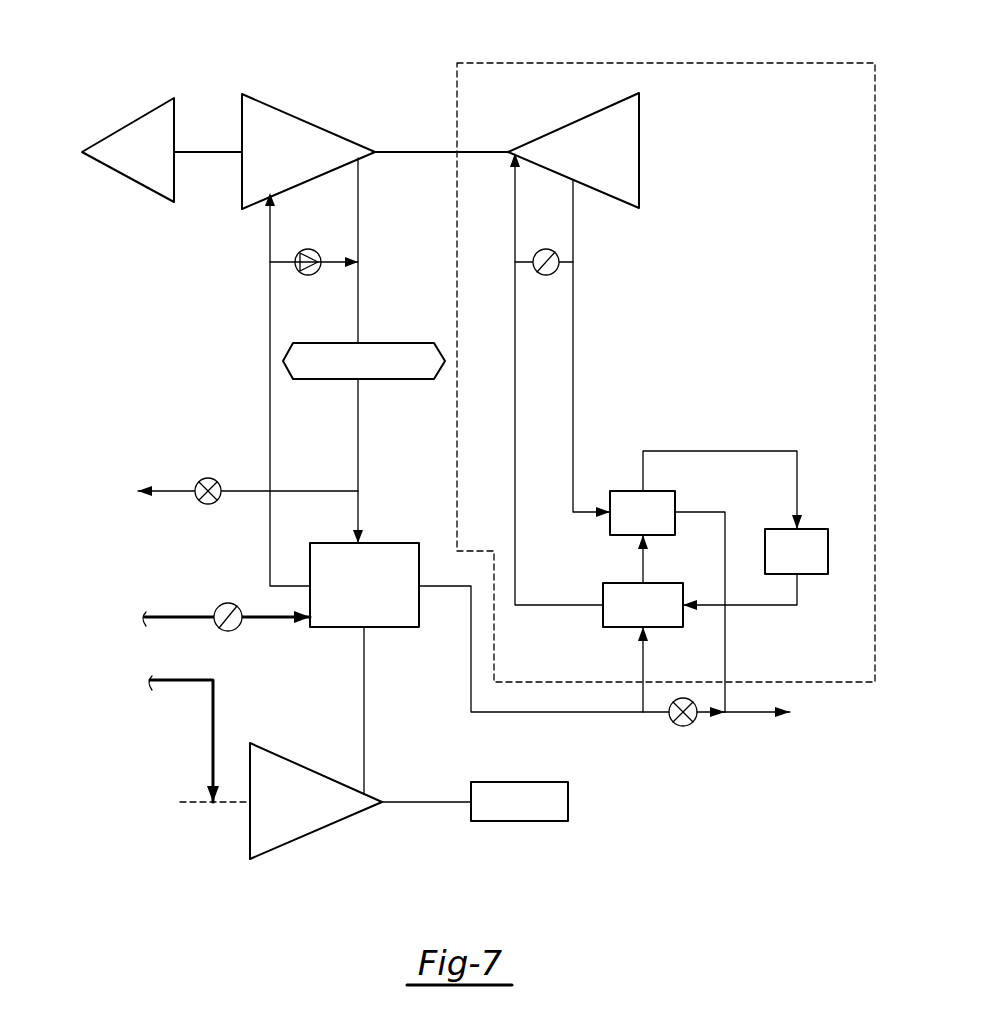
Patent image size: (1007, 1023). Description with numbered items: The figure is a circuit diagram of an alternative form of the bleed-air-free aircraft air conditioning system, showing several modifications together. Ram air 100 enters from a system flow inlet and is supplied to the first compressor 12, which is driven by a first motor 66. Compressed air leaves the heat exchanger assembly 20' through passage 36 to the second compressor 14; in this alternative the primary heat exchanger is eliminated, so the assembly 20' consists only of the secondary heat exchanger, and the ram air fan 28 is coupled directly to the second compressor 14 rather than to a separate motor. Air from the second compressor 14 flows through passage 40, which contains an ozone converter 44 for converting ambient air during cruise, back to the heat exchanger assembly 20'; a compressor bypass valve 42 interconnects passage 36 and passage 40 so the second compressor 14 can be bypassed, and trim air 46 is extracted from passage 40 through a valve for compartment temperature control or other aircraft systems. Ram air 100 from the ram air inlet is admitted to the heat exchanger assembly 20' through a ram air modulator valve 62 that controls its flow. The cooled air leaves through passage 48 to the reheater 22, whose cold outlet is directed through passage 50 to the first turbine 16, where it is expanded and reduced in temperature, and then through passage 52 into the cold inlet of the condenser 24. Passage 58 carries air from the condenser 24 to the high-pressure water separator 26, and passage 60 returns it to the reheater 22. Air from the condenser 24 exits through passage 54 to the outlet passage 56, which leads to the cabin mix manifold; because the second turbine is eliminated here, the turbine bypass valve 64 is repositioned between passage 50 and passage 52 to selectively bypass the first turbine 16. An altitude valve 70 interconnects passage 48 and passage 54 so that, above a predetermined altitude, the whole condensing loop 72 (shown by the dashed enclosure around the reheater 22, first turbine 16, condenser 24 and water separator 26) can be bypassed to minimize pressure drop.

The first compressor 12 is at (300, 840).
The second compressor 14 is at (299, 116).
The first turbine 16 is at (573, 121).
The heat exchanger assembly 20' is at (350, 570).
The reheater 22 is at (612, 627).
The condenser 24 is at (616, 535).
The high-pressure water separator 26 is at (829, 531).
The ram air fan 28 is at (148, 192).
The passage 36 is at (270, 320).
The passage 40 is at (358, 421).
The compressor bypass valve 42 is at (313, 250).
The ozone converter 44 is at (379, 343).
The trim air 46 is at (170, 492).
The passage 48 is at (527, 712).
The passage 50 is at (515, 478).
The passage 52 is at (573, 347).
The passage 54 is at (725, 667).
The passage 56 is at (757, 712).
The passage 58 is at (720, 451).
The passage 60 is at (797, 590).
The ram air modulator valve/actuator 62 is at (228, 631).
The turbine bypass valve 64 is at (549, 275).
The first motor 66 is at (503, 821).
The altitude valve 70 is at (685, 726).
The condensing loop 72 is at (697, 63).
The ram air 100 is at (108, 588).